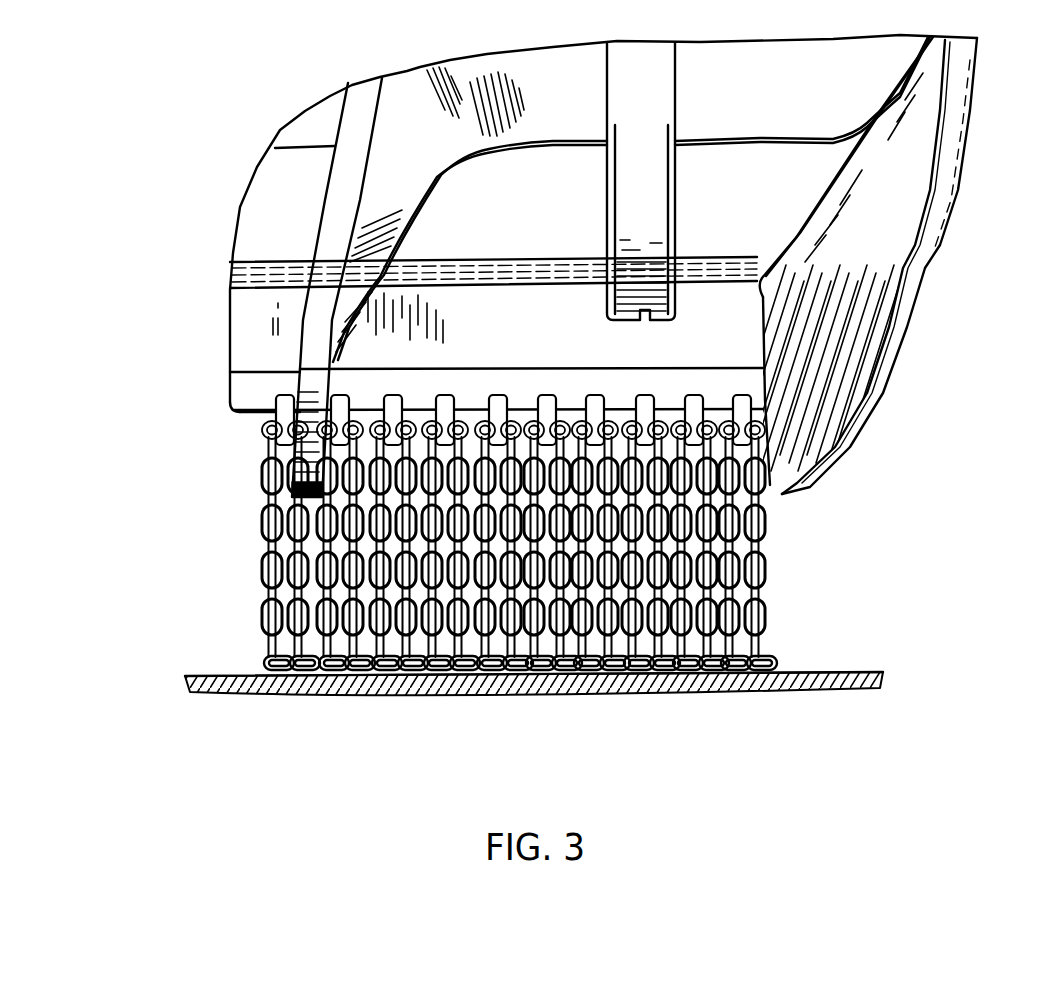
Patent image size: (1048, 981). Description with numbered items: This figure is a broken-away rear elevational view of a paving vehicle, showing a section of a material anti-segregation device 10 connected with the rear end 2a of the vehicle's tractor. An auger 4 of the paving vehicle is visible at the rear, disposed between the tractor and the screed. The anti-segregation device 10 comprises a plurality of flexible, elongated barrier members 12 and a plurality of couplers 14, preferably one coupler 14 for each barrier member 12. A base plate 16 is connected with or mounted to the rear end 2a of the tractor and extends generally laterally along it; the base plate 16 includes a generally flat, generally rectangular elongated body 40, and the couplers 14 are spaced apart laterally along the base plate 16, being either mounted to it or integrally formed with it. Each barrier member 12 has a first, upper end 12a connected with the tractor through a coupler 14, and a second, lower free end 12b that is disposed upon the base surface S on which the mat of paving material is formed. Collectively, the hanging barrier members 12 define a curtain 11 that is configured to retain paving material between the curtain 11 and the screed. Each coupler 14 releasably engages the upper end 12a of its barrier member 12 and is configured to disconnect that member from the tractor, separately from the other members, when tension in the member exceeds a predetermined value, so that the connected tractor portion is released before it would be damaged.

The rear end 2a is at (252, 312).
The auger 4 is at (921, 292).
The elongated body 40 is at (258, 380).
The material anti-segregation device 10 is at (142, 510).
The base plate 16 is at (438, 370).
The coupler 14 is at (275, 408).
The upper end 12a is at (272, 432).
The barrier member 12 is at (262, 572).
The lower end 12b is at (364, 683).
The curtain 11 is at (427, 700).
The base surface S is at (879, 672).